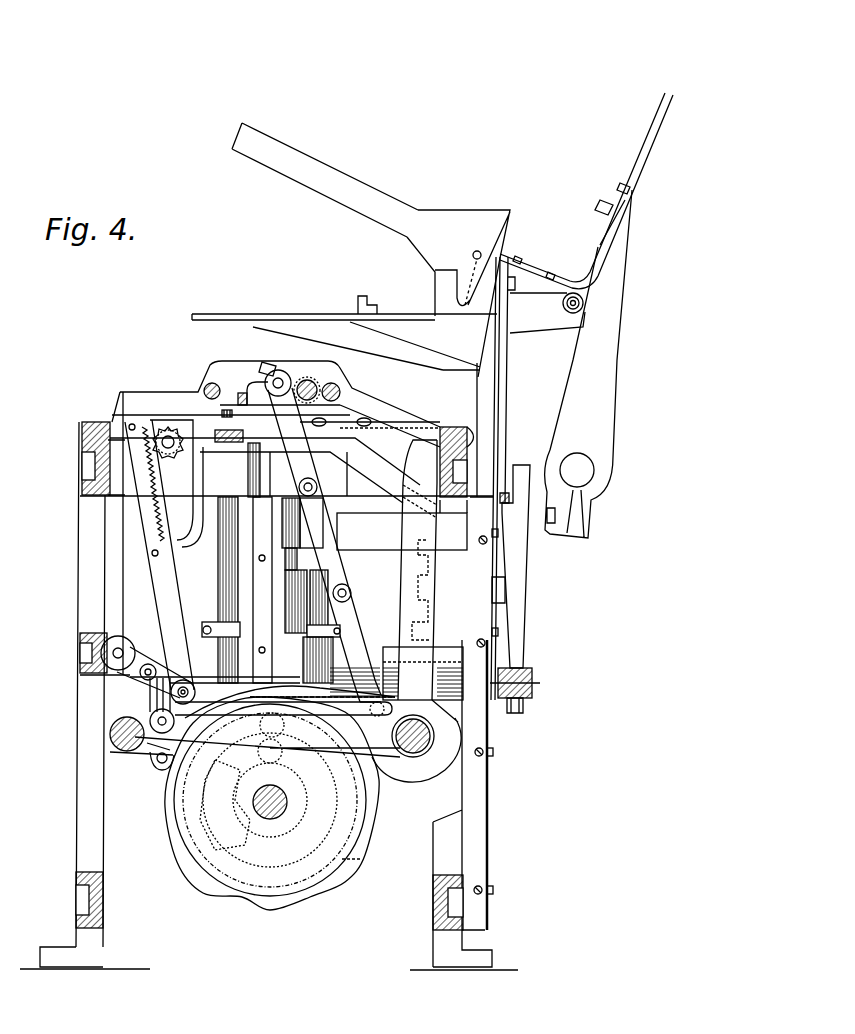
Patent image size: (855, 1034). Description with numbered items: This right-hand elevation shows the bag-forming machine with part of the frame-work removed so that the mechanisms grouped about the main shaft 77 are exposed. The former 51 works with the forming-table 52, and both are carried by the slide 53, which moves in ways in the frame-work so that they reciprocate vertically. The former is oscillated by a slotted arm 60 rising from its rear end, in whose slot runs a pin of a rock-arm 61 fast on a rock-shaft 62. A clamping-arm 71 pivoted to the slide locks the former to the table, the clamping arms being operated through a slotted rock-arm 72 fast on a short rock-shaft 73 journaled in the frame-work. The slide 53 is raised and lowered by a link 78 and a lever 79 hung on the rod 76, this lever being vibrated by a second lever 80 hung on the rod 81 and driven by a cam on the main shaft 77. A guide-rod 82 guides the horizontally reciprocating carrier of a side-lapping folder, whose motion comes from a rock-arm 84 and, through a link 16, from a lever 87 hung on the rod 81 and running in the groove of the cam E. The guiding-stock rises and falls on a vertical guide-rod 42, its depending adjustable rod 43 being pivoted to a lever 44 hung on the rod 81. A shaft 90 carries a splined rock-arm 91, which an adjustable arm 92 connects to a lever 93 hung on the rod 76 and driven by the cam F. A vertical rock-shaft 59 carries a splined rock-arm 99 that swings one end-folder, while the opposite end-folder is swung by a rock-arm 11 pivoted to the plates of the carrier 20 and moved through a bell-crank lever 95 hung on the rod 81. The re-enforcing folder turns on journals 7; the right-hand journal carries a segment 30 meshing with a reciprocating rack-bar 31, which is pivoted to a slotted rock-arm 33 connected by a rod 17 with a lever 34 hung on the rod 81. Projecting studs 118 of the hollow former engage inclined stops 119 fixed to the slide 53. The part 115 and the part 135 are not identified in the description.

The feed chute 115 is at (325, 180).
The projecting studs 118 is at (480, 246).
The inclined stops 119 is at (483, 282).
The slotted arm 60 is at (645, 139).
The rock-arm 61 is at (571, 323).
The rock-shaft 62 is at (579, 494).
The forming-table 52 is at (280, 313).
The rock-arm 91 is at (268, 362).
The rod 81 is at (216, 384).
The shaft 90 is at (289, 377).
The second lever 80 is at (308, 380).
The guide-rod 82 is at (340, 394).
The rock-arm 84 is at (370, 423).
The clamping-arm 71 is at (505, 358).
The slide 53 is at (482, 430).
The rock-arm 11 is at (224, 408).
The guiding-stock 20 is at (286, 459).
The journals 7 is at (168, 442).
The segment 30 is at (166, 488).
The block 135 is at (231, 442).
The adjustable arm 92 is at (324, 545).
The rock-arm 99 is at (302, 534).
The vertical rock-shaft 59 is at (296, 601).
The lever 44 is at (321, 626).
The vertical guide-rod 42 is at (221, 590).
The depending adjustable rod 43 is at (260, 563).
The bell-crank lever 95 is at (417, 570).
The rack-bar 31 is at (160, 562).
The slotted rock-arm 33 is at (148, 652).
The rod 17 is at (148, 693).
The link 16 is at (150, 708).
The rod 76 is at (141, 746).
The lever 34 is at (157, 772).
The main shaft 77 is at (270, 786).
The lever 79 is at (290, 700).
The lever 93 is at (285, 706).
The lever 87 is at (380, 757).
The former 51 is at (415, 725).
The link 78 is at (416, 741).
The rock-arm 72 is at (526, 604).
The rock-shaft 73 is at (533, 684).
The cam E is at (343, 860).
The cam F is at (369, 860).